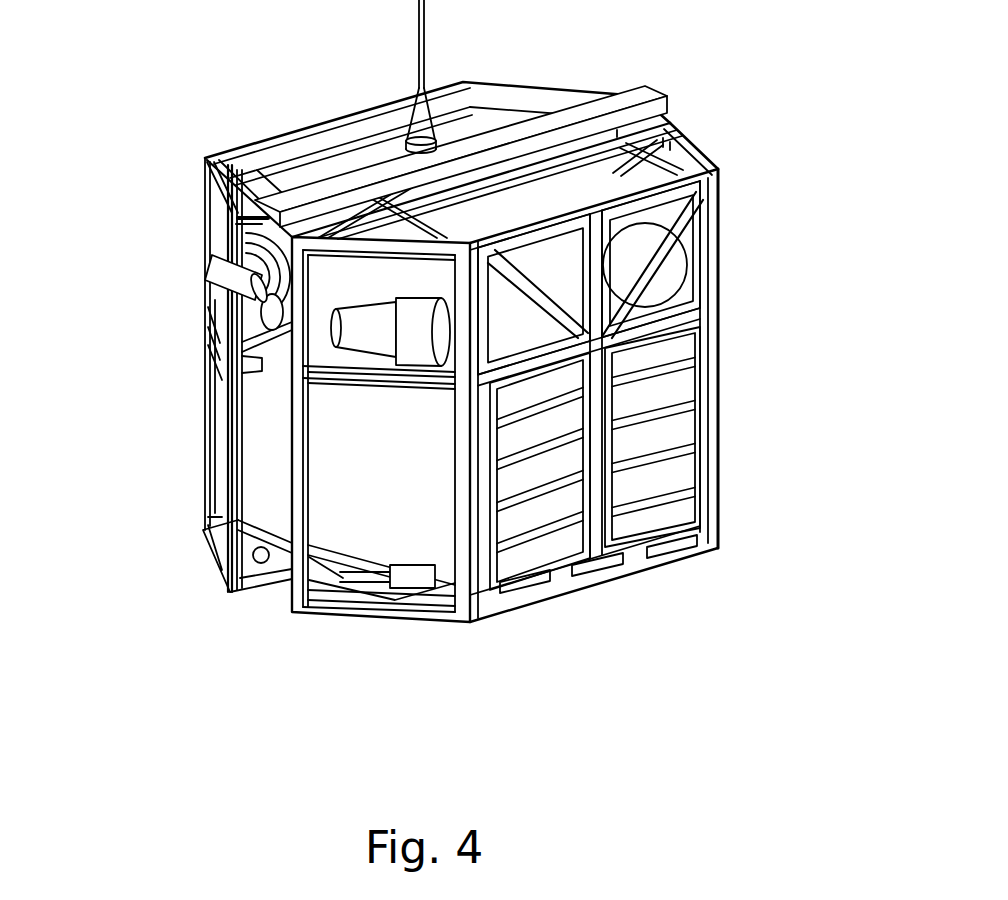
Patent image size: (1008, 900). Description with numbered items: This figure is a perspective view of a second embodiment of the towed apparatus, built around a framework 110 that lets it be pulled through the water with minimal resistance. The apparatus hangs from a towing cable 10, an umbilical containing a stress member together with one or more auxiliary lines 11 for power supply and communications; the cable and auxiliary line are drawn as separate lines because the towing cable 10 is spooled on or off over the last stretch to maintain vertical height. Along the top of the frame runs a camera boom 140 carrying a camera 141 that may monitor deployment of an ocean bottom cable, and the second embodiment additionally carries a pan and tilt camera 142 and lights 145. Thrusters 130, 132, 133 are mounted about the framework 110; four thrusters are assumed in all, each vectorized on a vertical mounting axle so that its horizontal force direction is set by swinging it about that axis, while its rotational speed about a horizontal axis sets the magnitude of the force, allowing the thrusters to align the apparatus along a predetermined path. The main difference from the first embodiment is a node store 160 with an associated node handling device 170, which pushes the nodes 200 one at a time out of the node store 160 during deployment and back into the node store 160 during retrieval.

The towing cable 10 is at (418, 57).
The auxiliary line 11 is at (452, 128).
The framework 110 is at (400, 114).
The thruster 130 is at (220, 226).
The thruster 132 is at (360, 330).
The thruster 133 is at (670, 280).
The camera boom 140 is at (620, 100).
The camera 141 is at (200, 273).
The pan and tilt camera 142 is at (223, 372).
The lights 145 is at (262, 563).
The node store 160 is at (405, 489).
The node handling device 170 is at (410, 577).
The nodes 200 is at (685, 433).